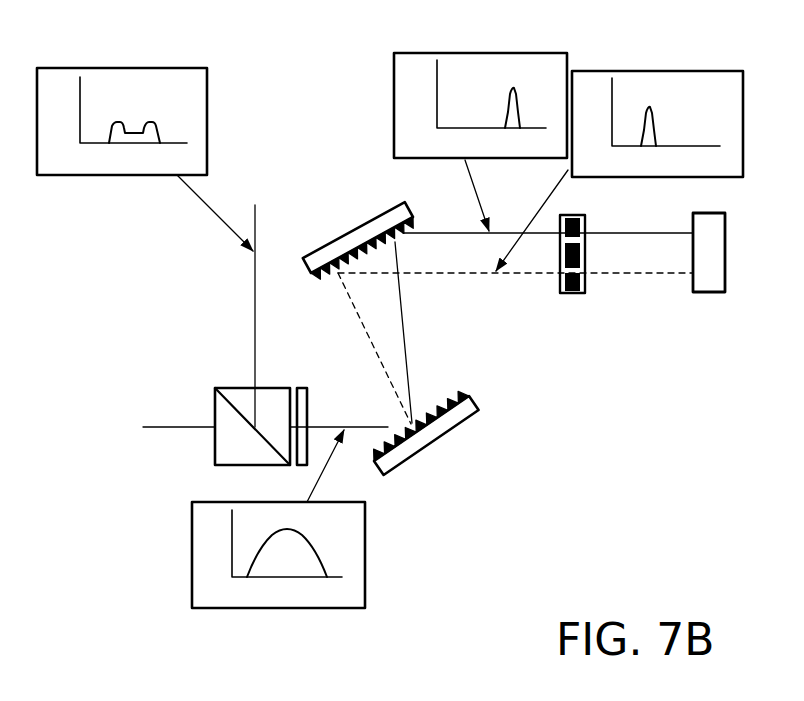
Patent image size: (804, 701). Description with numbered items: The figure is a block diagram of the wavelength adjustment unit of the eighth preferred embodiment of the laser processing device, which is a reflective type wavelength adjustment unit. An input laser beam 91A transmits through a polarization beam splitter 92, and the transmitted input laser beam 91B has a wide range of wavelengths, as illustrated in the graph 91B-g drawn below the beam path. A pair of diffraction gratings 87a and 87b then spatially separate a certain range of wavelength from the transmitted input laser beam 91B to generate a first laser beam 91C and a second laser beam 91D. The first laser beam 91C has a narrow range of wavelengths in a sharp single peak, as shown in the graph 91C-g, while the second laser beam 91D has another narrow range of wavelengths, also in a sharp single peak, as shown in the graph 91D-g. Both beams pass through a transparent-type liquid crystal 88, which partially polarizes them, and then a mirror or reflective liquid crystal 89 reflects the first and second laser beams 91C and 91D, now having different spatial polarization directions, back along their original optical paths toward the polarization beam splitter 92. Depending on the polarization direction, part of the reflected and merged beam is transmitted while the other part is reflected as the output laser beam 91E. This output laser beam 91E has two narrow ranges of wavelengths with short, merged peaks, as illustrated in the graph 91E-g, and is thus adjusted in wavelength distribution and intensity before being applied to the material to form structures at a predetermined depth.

The graph of output laser beam wavelength distribution 91E-g is at (207, 100).
The graph of first laser beam wavelength distribution 91C-g is at (517, 53).
The graph of second laser beam wavelength distribution 91D-g is at (693, 71).
The graph of transmitted input laser beam wavelength distribution 91B-g is at (365, 552).
The input laser beam 91A is at (158, 425).
The transmitted input laser beam 91B is at (328, 423).
The first laser beam 91C is at (430, 233).
The second laser beam 91D is at (445, 275).
The output laser beam 91E is at (255, 293).
The diffraction grating 87a is at (440, 445).
The diffraction grating 87b is at (332, 242).
The polarization beam splitter 92 is at (218, 450).
The transparent-type liquid crystal 88 is at (568, 295).
The mirror or reflective liquid crystal 89 is at (725, 247).